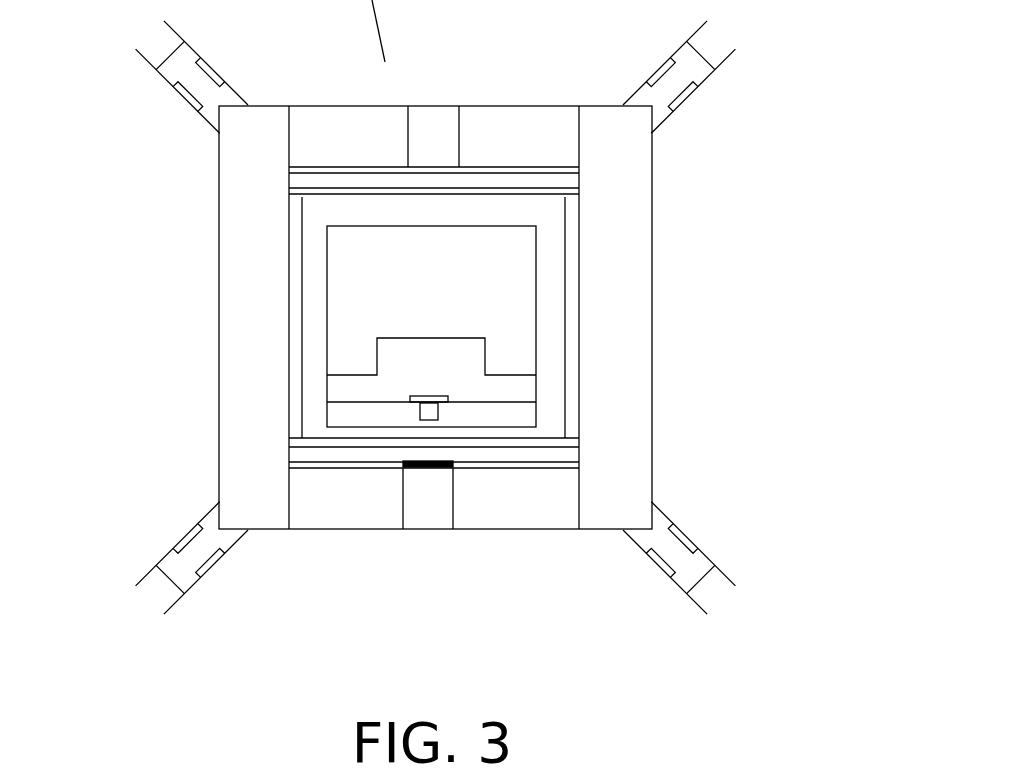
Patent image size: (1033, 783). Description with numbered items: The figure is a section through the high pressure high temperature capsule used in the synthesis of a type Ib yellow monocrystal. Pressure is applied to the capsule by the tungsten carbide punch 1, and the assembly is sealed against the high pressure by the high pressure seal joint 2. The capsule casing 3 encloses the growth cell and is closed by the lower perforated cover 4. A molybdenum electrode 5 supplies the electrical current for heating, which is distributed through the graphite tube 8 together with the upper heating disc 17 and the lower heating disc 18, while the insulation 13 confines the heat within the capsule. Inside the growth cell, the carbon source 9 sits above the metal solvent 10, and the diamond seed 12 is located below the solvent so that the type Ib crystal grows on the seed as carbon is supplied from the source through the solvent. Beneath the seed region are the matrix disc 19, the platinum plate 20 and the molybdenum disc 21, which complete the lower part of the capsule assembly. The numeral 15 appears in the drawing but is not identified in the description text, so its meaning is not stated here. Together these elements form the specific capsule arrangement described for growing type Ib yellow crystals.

The tungsten carbide punch 1 is at (18, 450).
The high pressure seal joint 2 is at (700, 62).
The capsule casing 3 is at (623, 252).
The lower perforated cover 4 is at (558, 125).
The molybdenum electrode 5 is at (428, 130).
The graphite tube 8 is at (572, 358).
The carbon source 9 is at (365, 262).
The metal solvent 10 is at (345, 390).
The diamond seed 12 is at (427, 417).
The insulation 13 is at (313, 419).
The strip 15 is at (348, 193).
The upper heating disc 17 is at (567, 180).
The lower heating disc 18 is at (567, 452).
The matrix disc 19 is at (345, 417).
The platinum plate 20 is at (415, 402).
The molybdenum disc 21 is at (465, 463).